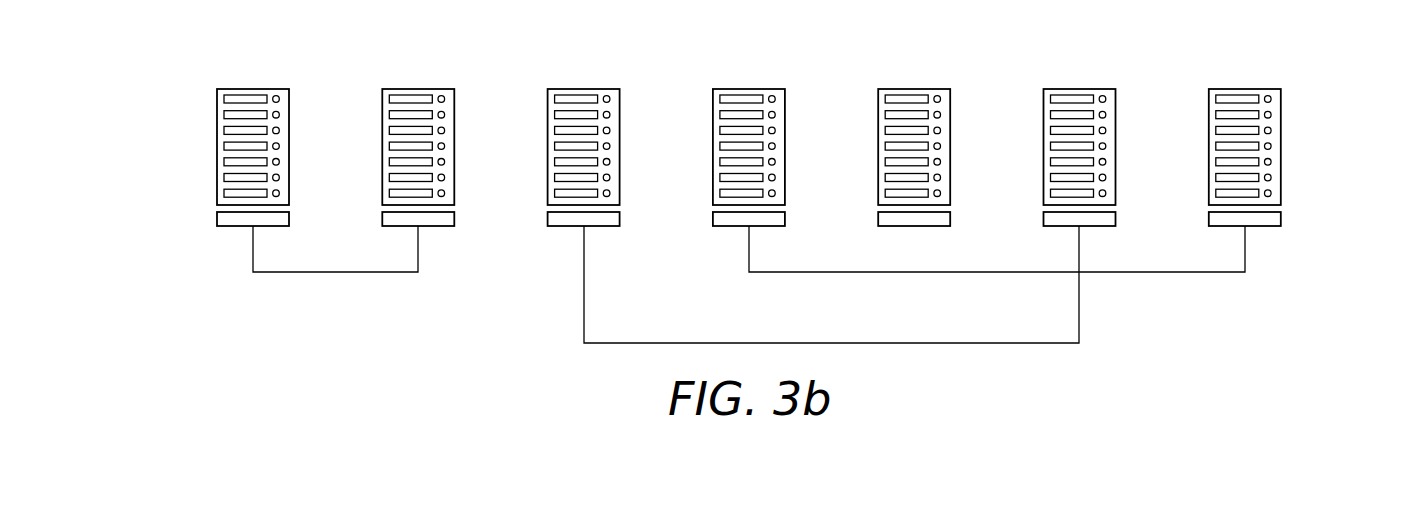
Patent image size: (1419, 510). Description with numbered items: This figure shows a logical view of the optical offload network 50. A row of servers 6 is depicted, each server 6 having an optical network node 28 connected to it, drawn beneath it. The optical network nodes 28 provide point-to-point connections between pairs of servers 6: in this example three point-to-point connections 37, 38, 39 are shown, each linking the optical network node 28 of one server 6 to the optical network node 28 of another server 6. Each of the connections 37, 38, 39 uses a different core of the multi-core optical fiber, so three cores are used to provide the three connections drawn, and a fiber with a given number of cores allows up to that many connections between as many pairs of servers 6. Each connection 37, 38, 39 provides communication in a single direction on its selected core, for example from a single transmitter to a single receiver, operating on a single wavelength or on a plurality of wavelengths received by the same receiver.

The optical offload network 50 is at (200, 62).
The server 6 is at (749, 117).
The optical network node 28 is at (782, 217).
The point-to-point connection 37 is at (337, 272).
The point-to-point connection 38 is at (1199, 272).
The point-to-point connection 39 is at (1033, 343).